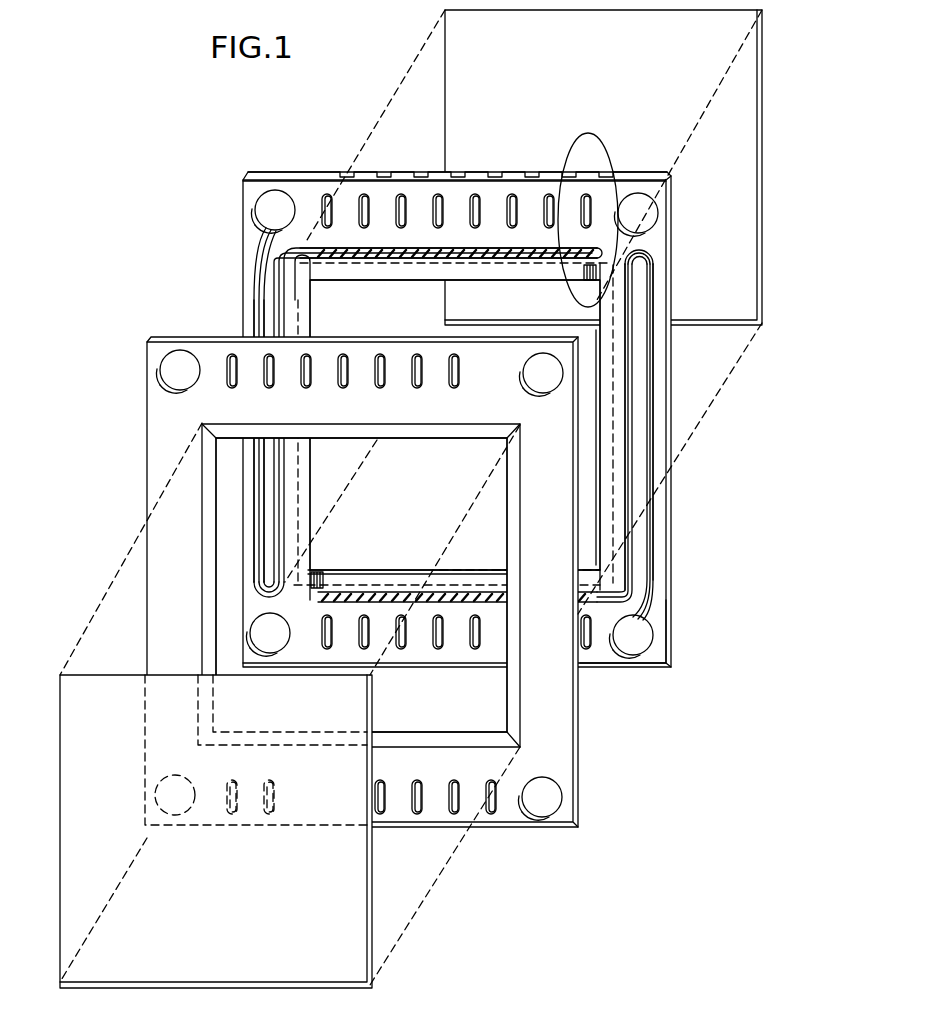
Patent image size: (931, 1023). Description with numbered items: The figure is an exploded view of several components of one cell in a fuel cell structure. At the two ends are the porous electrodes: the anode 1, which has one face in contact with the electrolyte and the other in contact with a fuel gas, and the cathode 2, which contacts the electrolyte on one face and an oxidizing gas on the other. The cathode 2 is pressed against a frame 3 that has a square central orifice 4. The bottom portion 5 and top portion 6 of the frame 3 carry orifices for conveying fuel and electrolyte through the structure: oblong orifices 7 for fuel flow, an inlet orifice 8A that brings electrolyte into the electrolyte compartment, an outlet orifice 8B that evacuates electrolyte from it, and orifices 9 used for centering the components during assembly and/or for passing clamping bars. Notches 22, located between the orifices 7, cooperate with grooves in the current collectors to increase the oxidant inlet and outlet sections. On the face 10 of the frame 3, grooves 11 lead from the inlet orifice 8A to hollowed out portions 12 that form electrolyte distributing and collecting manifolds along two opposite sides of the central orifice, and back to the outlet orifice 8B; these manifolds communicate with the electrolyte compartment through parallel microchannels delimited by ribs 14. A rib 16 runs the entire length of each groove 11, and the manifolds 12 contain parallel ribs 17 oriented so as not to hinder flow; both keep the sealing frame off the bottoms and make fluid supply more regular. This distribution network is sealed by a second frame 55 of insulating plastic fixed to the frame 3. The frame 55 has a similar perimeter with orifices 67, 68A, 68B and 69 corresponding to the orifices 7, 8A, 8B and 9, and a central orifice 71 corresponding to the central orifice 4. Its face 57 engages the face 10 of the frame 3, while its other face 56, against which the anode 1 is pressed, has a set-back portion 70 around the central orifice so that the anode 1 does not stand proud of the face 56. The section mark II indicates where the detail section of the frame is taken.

The anode 1 is at (230, 972).
The cathode 2 is at (448, 62).
The frame 3 is at (298, 164).
The central orifice 4 is at (322, 313).
The bottom portion 5 is at (597, 653).
The top portion 6 is at (381, 193).
The orifices for fuel flow 7 is at (364, 195).
The inlet orifice 8A is at (272, 210).
The outlet orifice 8B is at (634, 637).
The centering orifices 9 is at (637, 213).
The face of the frame 10 is at (658, 372).
The grooves 11 is at (277, 277).
The hollowed out portions 12 is at (385, 263).
The ribs 14 is at (323, 268).
The rib 16 is at (263, 300).
The ribs 17 is at (426, 258).
The notches 22 is at (427, 177).
The second frame 55 is at (147, 438).
The face of the second frame 56 is at (170, 524).
The opposite face of the second frame 57 is at (173, 636).
The orifices 67 is at (225, 356).
The orifice 68A is at (180, 370).
The orifice 68B is at (542, 797).
The orifices 69 is at (543, 373).
The set-back portion 70 is at (205, 507).
The central orifice 71 is at (477, 713).
The section line indicator II is at (583, 137).